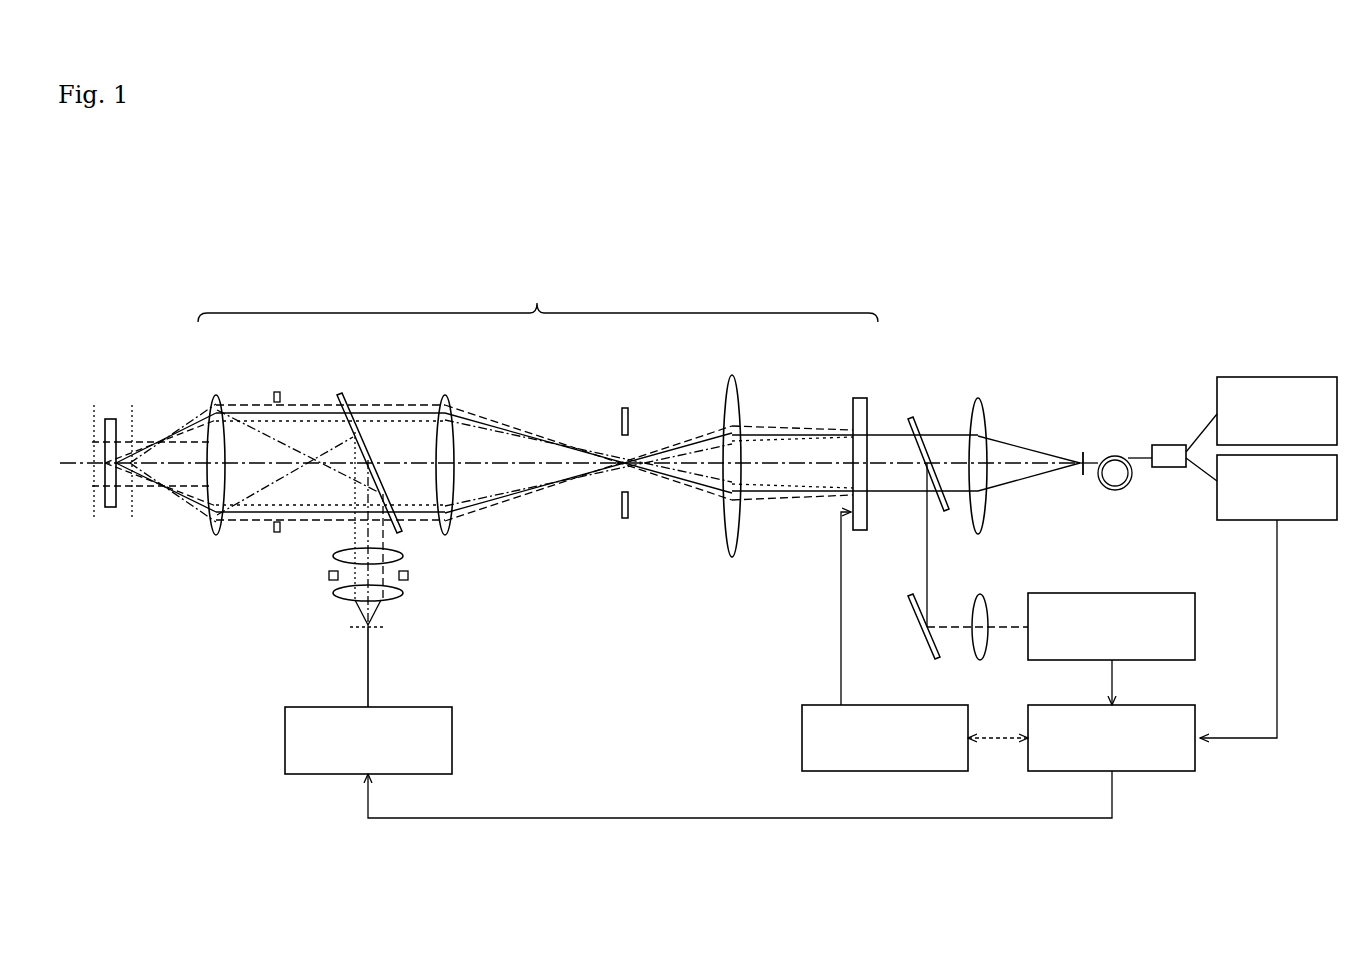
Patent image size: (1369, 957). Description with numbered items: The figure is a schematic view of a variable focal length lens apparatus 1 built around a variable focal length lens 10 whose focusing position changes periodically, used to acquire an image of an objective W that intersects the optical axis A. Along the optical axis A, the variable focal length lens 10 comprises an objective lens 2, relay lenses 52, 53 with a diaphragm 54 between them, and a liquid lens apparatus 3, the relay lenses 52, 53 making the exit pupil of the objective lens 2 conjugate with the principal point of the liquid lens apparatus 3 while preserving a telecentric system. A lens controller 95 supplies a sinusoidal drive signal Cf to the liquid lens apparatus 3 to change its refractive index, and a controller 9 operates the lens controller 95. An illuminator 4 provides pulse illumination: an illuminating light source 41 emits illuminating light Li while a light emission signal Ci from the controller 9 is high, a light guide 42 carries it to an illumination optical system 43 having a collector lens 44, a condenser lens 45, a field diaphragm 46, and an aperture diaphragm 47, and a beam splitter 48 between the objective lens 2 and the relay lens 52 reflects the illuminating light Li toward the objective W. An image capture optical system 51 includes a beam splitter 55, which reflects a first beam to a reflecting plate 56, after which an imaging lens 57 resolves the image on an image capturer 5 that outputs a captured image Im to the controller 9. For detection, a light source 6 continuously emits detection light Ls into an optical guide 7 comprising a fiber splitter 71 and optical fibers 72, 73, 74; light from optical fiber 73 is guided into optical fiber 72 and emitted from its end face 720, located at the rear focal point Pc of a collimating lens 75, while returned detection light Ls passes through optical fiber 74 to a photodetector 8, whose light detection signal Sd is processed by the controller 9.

The variable focal length lens apparatus 1 is at (1087, 242).
The objective lens 2 is at (219, 402).
The liquid lens apparatus 3 is at (868, 410).
The illuminator 4 is at (268, 663).
The image capturer 5 is at (1178, 593).
The light source 6 is at (1311, 377).
The optical guide 7 is at (1145, 337).
The photodetector 8 is at (1312, 520).
The controller 9 is at (1178, 705).
The variable focal length lens 10 is at (538, 296).
The illuminating light source 41 is at (452, 740).
The light guide 42 is at (372, 660).
The illumination optical system 43 is at (293, 590).
The collector lens 44 is at (403, 596).
The condenser lens 45 is at (403, 553).
The field diaphragm 46 is at (408, 576).
The aperture diaphragm 47 is at (277, 392).
The beam splitter 48 is at (348, 400).
The image capture optical system 51 is at (985, 566).
The relay lens 52 is at (452, 402).
The relay lens 53 is at (741, 408).
The diaphragm 54 is at (624, 408).
The beam splitter 55 is at (915, 424).
The reflecting plate 56 is at (930, 648).
The imaging lens 57 is at (976, 648).
The fiber splitter 71 is at (1167, 445).
The optical fiber 72 is at (1131, 456).
The optical fiber 73 is at (1199, 438).
The optical fiber 74 is at (1203, 470).
The collimating lens 75 is at (985, 414).
The lens controller 95 is at (822, 705).
The end face 720 is at (1108, 458).
The objective W is at (106, 419).
The detection light Ls is at (170, 432).
The illuminating light Li is at (310, 478).
The optical axis A is at (525, 463).
The rear focal point position Pc is at (1081, 456).
The drive signal Cf is at (828, 608).
The captured image Im is at (1130, 682).
The light detection signal Sd is at (1260, 629).
The light emission signal Ci is at (740, 809).